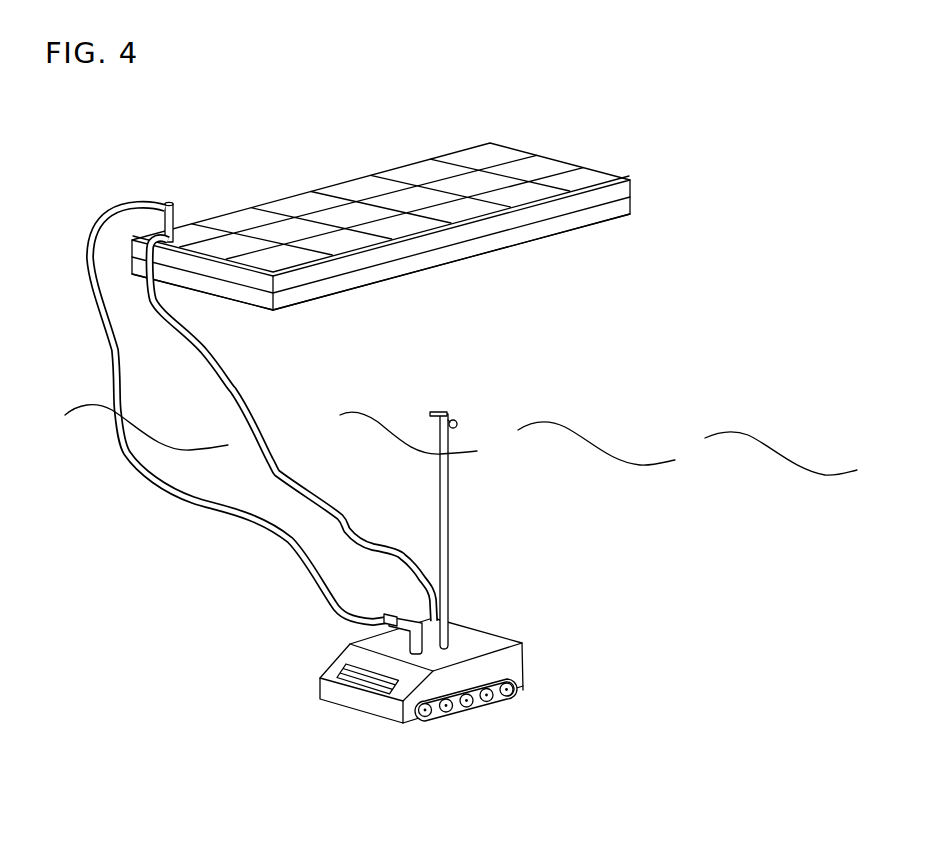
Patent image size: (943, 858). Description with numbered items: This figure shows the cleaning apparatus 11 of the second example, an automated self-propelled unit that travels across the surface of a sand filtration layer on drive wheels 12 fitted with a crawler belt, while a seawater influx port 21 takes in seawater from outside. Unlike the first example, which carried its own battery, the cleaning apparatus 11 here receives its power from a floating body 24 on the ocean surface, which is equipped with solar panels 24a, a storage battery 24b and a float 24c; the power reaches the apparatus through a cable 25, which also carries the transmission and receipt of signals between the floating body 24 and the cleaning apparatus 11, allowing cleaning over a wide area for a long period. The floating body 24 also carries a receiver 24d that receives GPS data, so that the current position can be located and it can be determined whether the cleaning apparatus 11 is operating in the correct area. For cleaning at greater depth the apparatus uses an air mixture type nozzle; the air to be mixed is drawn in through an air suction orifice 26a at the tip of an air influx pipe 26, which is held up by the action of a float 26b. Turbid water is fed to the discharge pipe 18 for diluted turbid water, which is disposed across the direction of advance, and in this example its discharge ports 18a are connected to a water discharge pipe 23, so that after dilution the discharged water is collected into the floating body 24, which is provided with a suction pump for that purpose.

The cleaning apparatus 11 is at (351, 715).
The drive wheels 12 is at (486, 698).
The discharge pipe for diluted turbid water 18 is at (401, 619).
The discharge ports 18a is at (381, 616).
The seawater influx port 21 is at (357, 663).
The water discharge pipe 23 is at (153, 478).
The floating body 24 is at (364, 168).
The solar panels 24a is at (492, 151).
The storage battery 24b is at (633, 191).
The float 24c is at (606, 213).
The receiver 24d is at (177, 218).
The cable 25 is at (225, 388).
The air influx pipe 26 is at (446, 446).
The air suction orifice 26a is at (428, 413).
The float 26b is at (454, 420).